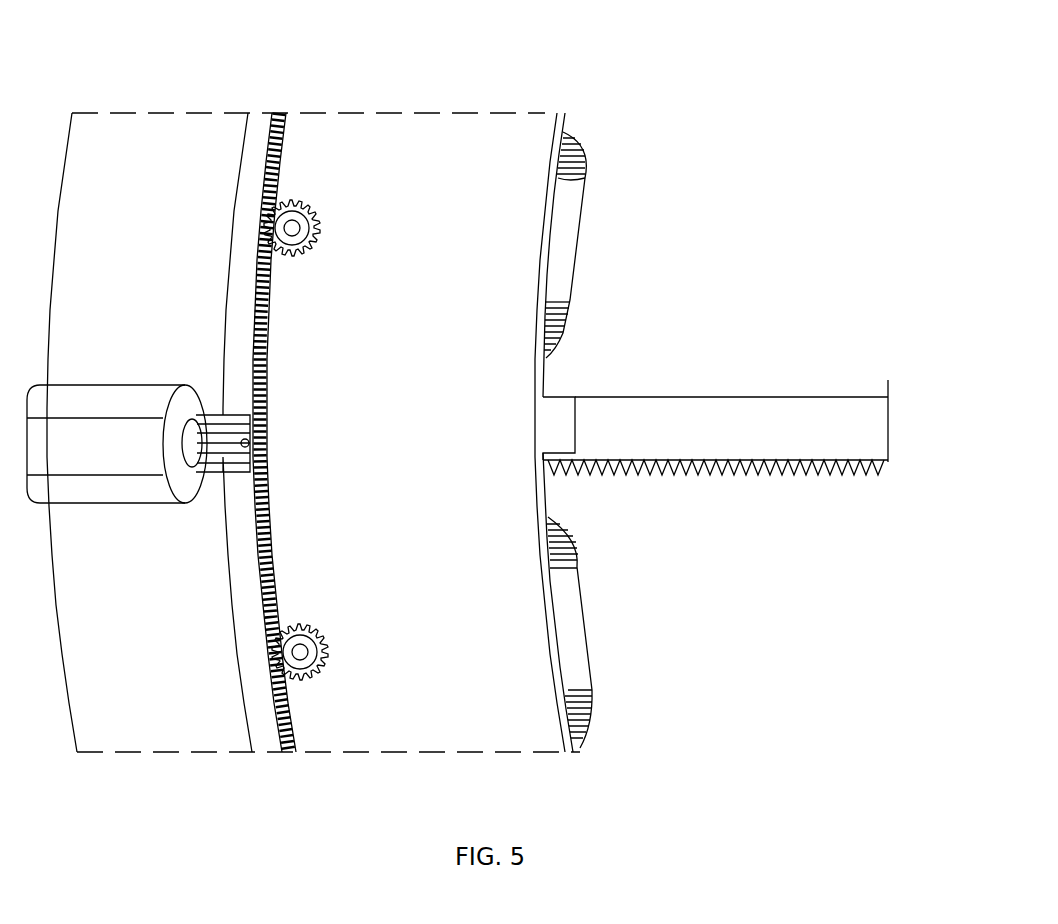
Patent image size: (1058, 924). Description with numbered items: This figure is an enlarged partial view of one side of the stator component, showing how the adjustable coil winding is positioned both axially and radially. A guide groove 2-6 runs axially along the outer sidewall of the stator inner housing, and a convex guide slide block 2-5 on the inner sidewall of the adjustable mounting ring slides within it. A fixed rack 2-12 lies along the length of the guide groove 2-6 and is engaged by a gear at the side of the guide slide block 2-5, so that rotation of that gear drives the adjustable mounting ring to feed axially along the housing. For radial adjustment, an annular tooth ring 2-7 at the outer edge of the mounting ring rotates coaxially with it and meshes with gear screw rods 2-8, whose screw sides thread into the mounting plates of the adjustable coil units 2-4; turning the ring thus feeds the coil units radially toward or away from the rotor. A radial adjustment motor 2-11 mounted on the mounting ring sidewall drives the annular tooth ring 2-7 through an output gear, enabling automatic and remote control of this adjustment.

The adjustable coil unit 2-4 is at (577, 231).
The guide slide block 2-5 is at (561, 407).
The guide groove 2-6 is at (739, 401).
The annular tooth ring 2-7 is at (253, 199).
The gear screw rod 2-8 is at (315, 184).
The radial adjustment motor 2-11 is at (84, 402).
The fixed rack 2-12 is at (774, 449).